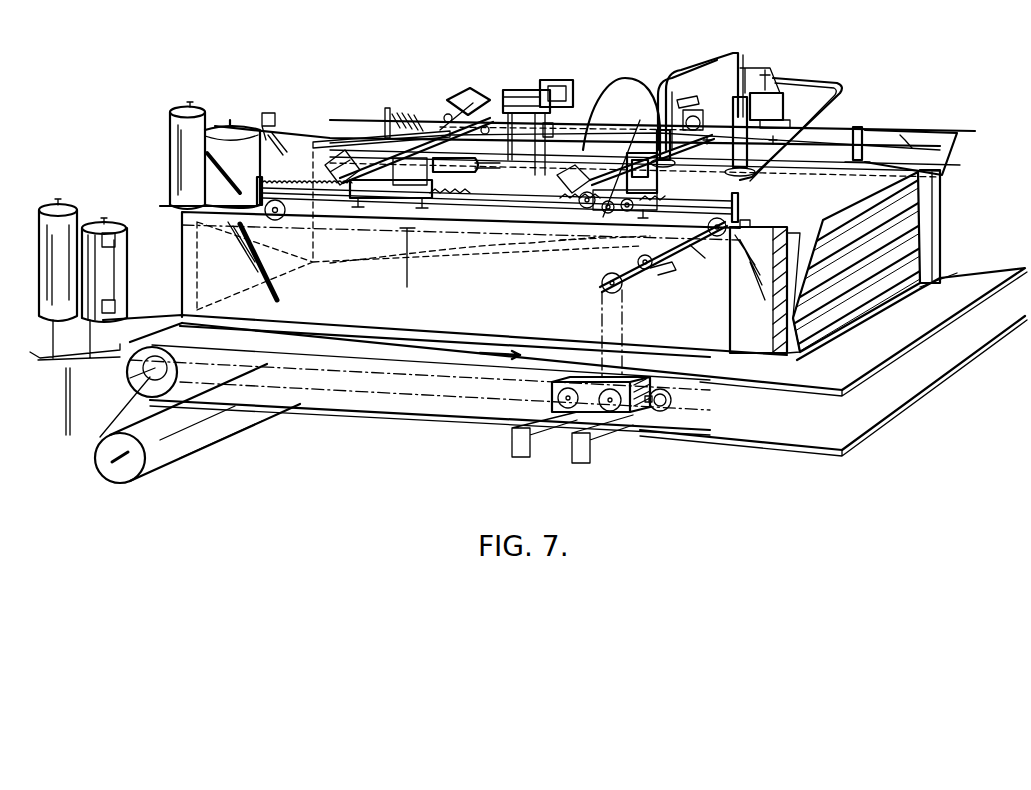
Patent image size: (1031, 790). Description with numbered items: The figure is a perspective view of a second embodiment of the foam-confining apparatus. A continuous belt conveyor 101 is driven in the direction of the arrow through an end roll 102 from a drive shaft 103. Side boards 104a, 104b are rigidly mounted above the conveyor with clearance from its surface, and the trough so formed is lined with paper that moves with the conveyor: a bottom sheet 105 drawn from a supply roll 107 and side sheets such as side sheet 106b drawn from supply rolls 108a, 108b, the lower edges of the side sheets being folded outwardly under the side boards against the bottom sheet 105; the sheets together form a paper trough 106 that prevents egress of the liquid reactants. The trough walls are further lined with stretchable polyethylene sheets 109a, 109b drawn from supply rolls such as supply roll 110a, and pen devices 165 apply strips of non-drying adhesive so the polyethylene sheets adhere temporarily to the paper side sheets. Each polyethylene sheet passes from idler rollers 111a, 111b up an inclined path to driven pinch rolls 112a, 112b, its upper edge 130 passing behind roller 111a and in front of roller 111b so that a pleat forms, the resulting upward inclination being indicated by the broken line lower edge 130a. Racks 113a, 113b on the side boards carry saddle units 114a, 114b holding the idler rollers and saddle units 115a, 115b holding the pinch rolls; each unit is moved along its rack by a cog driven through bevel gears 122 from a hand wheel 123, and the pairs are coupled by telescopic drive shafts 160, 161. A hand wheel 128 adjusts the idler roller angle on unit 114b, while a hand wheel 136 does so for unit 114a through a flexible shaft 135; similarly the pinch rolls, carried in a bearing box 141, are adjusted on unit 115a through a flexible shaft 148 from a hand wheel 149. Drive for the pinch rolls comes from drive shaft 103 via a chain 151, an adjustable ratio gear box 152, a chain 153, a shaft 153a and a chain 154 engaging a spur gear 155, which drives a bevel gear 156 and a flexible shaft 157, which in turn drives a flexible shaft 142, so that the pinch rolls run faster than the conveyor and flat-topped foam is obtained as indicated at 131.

The continuous belt conveyor 101 is at (477, 330).
The end roll 102 is at (130, 363).
The drive shaft 103 is at (150, 378).
The side board 104a is at (735, 349).
The side board 104b is at (927, 165).
The bottom sheet 105 is at (805, 347).
The lower base plate 106 is at (793, 347).
The side sheet 106b is at (933, 243).
The supply roll 107 is at (183, 453).
The supply roll 108a is at (100, 260).
The supply roll 108b is at (238, 122).
The sheet of flexible and stretchable material 109a is at (823, 217).
The sheet of flexible and stretchable material 109b is at (937, 140).
The supply roll 110a is at (50, 210).
The idler roller 111a is at (510, 167).
The idler roller 111b is at (515, 233).
The pinch roll 112a is at (773, 173).
The pinch roll 112b is at (837, 180).
The rack 113a is at (287, 188).
The rack 113b is at (400, 117).
The saddle unit 114a is at (383, 197).
The saddle unit 114b is at (497, 87).
The saddle unit 115a is at (672, 232).
The saddle unit 115b is at (820, 93).
The bevel gear 122 is at (360, 172).
The hand wheel 123 is at (457, 100).
The hand wheel 128 is at (557, 87).
The upper edge 130 is at (590, 102).
The lower edge of the sheet 130a is at (603, 284).
The flat-topped foam 131 is at (913, 292).
The flexible shaft 135 is at (490, 177).
The hand wheel 136 is at (507, 100).
The bearing box 141 is at (720, 113).
The flexible shaft 142 is at (717, 53).
The flexible shaft 148 is at (847, 92).
The hand wheel 149 is at (750, 68).
The chain 151 is at (418, 403).
The adjustable ratio gear box 152 is at (650, 413).
The chain 153 is at (625, 330).
The shaft 153a is at (675, 270).
The chain 154 is at (408, 275).
The spur gear 155 is at (640, 263).
The bevel gear 156 is at (607, 150).
The flexible shaft 157 is at (640, 77).
The telescopic drive shaft 160 is at (442, 125).
The telescopic drive shaft 161 is at (655, 93).
The pen device 165 is at (100, 228).